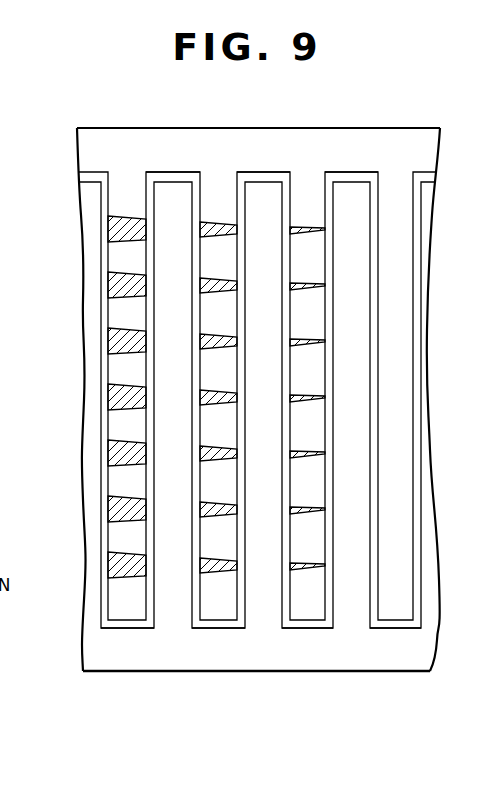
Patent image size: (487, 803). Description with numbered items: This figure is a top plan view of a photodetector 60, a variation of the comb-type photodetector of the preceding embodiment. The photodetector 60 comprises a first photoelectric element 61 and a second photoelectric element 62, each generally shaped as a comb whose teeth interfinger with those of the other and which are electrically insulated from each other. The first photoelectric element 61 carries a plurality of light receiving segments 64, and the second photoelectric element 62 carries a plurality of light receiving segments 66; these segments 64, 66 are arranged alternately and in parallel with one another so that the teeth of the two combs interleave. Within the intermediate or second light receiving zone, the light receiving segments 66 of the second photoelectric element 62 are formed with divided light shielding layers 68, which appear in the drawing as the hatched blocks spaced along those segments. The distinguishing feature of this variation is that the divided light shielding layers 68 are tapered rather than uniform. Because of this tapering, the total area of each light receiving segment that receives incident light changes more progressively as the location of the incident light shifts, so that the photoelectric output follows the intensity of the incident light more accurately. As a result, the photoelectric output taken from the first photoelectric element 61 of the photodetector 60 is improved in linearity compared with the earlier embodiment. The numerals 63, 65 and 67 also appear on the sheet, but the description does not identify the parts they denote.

The photodetector 60 is at (390, 110).
The first photoelectric element 61 is at (437, 681).
The second photoelectric element 62 is at (427, 120).
The bottom electrode layer 63 is at (306, 673).
The light receiving segment 64 is at (163, 436).
The base portion of electrode 65 is at (273, 138).
The light receiving segment 66 is at (130, 372).
The insulating film 67 is at (105, 500).
The divided light shielding layer 68 is at (127, 216).